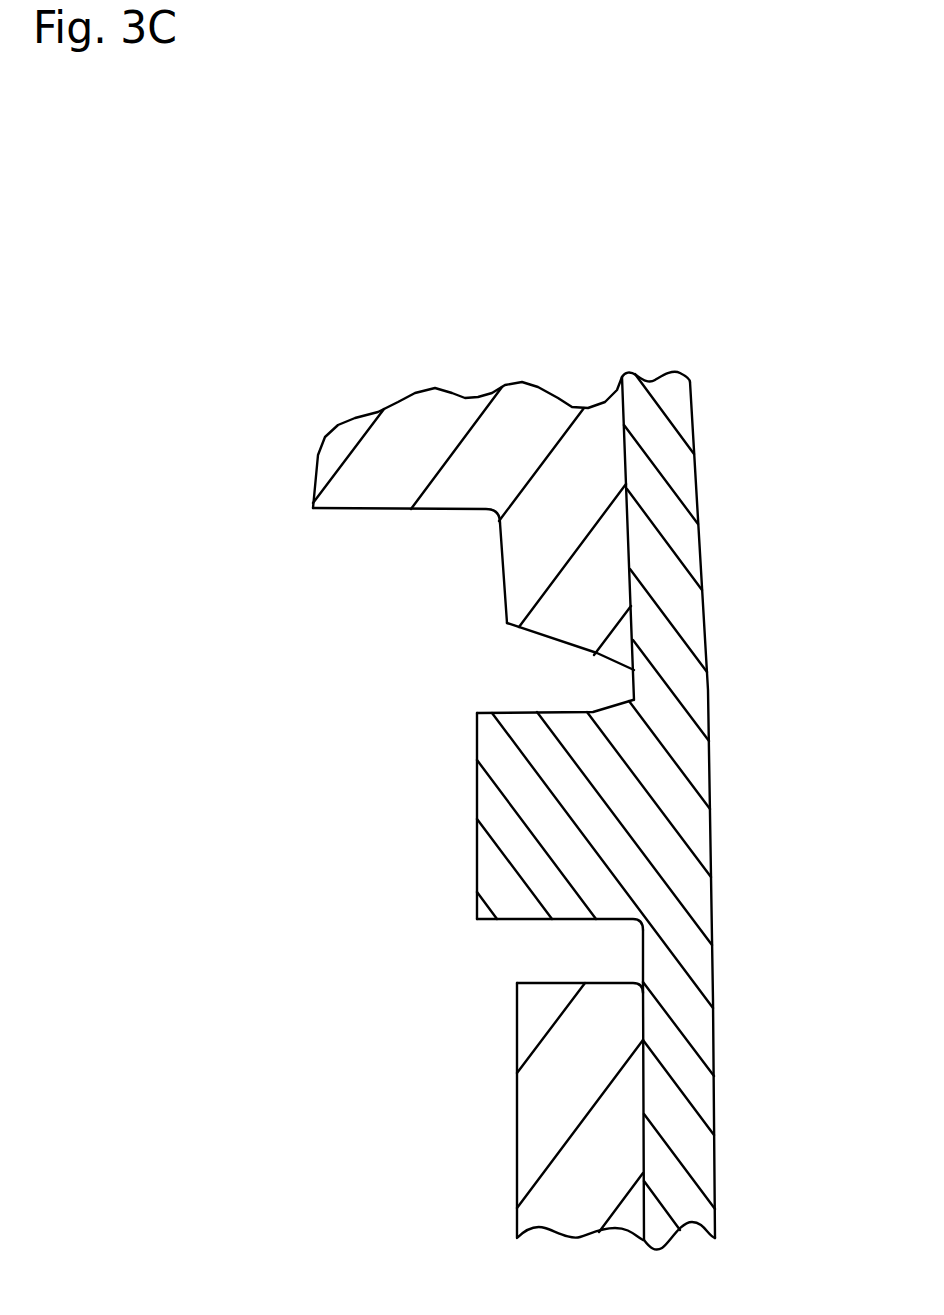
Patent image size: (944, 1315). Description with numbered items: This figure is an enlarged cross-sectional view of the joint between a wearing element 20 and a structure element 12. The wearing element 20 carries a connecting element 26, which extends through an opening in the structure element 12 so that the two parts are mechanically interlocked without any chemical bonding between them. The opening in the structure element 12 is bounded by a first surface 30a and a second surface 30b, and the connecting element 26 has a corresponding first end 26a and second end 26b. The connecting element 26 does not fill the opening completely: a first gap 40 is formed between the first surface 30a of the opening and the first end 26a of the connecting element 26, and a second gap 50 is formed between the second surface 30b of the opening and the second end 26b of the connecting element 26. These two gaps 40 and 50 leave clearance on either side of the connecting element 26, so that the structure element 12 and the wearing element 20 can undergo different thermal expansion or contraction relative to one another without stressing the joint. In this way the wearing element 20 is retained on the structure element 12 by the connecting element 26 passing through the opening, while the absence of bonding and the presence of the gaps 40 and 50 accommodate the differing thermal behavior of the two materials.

The structure element 12 is at (528, 482).
The wearing element 20 is at (695, 780).
The connecting element 26 is at (488, 816).
The first end of connecting element 26a is at (537, 710).
The second end of connecting element 26b is at (543, 922).
The first surface of opening 30a is at (563, 645).
The second surface of opening 30b is at (563, 982).
The first gap 40 is at (573, 680).
The second gap 50 is at (607, 950).